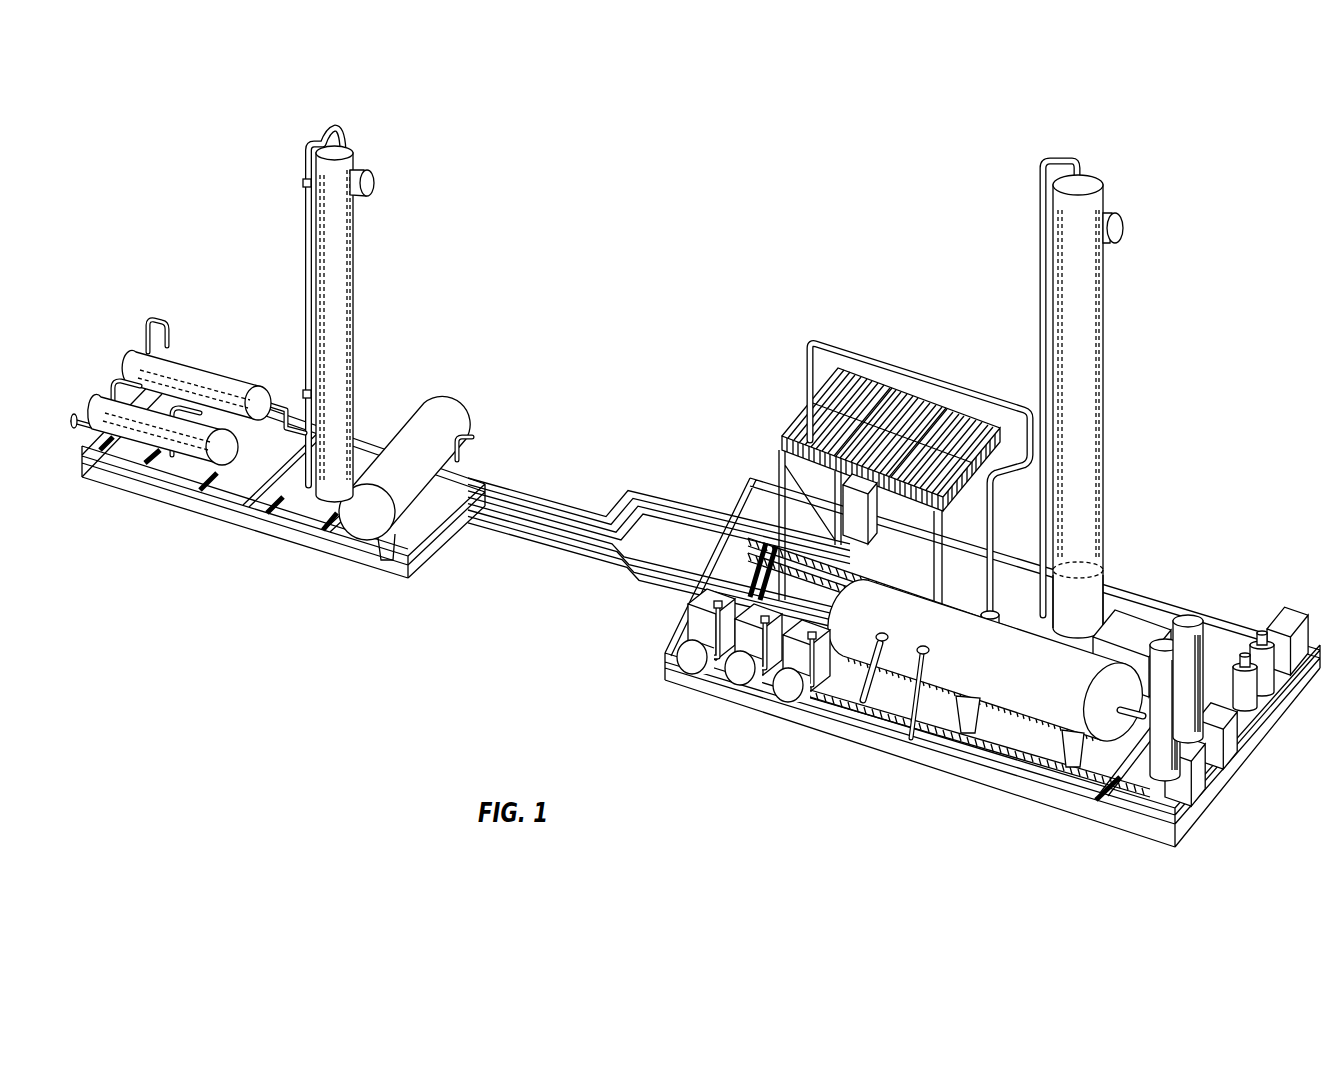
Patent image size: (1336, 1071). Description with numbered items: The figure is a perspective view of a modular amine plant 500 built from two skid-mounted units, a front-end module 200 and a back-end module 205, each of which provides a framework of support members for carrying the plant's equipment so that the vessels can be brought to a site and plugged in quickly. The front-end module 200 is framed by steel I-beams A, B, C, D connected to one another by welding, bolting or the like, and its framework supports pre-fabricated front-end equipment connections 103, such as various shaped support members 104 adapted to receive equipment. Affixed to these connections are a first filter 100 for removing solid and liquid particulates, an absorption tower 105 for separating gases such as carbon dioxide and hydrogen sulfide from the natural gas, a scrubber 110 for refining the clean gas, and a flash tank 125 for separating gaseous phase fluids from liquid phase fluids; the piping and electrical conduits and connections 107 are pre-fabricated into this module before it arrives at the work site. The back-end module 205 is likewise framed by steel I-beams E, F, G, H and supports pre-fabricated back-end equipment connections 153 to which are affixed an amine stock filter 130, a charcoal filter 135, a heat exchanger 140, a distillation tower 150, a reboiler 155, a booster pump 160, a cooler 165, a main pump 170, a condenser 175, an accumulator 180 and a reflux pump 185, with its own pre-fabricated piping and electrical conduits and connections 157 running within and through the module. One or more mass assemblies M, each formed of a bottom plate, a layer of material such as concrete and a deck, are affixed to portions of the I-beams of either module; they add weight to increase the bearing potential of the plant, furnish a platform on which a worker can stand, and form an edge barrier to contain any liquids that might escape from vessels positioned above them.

The first filter 100 is at (190, 372).
The pre-fabricated front-end equipment connections 103 is at (143, 453).
The support members 104 is at (245, 480).
The absorption tower 105 is at (347, 290).
The piping and electrical conduits and/or connections 107 is at (255, 518).
The scrubber 110 is at (110, 398).
The flash tank 125 is at (437, 406).
The amine stock filter 130 is at (1262, 680).
The charcoal filter 135 is at (1247, 707).
The heat exchanger 140 is at (1143, 640).
The distillation tower 150 is at (1095, 324).
The pre-fabricated back-end equipment connections 153 is at (893, 672).
The reboiler 155 is at (1000, 705).
The piping and electrical conduits and/or connections 157 is at (742, 596).
The booster pump 160 is at (738, 671).
The cooler 165 is at (800, 415).
The main pump 170 is at (690, 658).
The condenser 175 is at (896, 375).
The accumulator 180 is at (1090, 593).
The reflux pump 185 is at (787, 688).
The front-end module 200 is at (102, 562).
The back-end module 205 is at (818, 766).
The amine plant 500 is at (1214, 128).
The steel I-beam A is at (365, 440).
The steel I-beam B is at (96, 443).
The steel I-beam C is at (157, 503).
The steel I-beam D is at (417, 557).
The steel I-beam E is at (1160, 593).
The steel I-beam F is at (756, 575).
The steel I-beam G is at (933, 767).
The steel I-beam H is at (1224, 781).
The mass assembly M is at (287, 487).